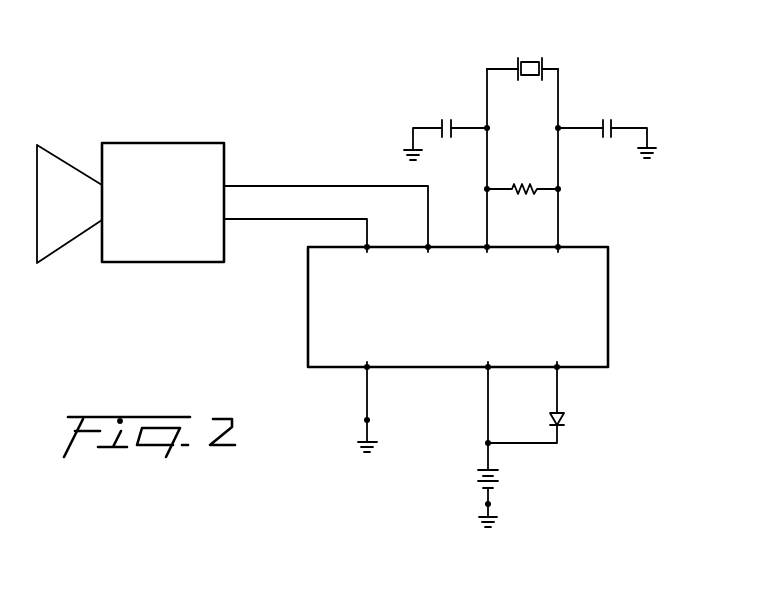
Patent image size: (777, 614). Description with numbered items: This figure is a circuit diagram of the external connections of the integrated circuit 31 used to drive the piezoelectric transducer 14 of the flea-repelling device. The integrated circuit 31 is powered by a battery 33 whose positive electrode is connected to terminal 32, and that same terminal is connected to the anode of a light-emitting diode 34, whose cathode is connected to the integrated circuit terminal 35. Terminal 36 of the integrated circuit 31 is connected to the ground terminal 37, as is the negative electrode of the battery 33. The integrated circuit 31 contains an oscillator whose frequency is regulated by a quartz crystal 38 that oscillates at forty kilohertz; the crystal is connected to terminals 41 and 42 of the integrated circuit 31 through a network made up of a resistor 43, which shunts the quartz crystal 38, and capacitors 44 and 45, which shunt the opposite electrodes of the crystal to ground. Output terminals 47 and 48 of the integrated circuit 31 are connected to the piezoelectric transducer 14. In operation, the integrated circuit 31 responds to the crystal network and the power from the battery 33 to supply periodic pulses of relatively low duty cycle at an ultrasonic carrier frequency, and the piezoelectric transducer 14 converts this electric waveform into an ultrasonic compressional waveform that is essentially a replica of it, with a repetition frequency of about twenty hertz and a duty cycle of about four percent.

The piezoelectric transducer 14 is at (182, 151).
The integrated circuit 31 is at (593, 310).
The terminal 32 is at (486, 368).
The battery 33 is at (478, 478).
The light-emitting diode 34 is at (550, 418).
The integrated circuit terminal 35 is at (560, 368).
The terminal 36 is at (366, 368).
The ground terminal 37 is at (366, 420).
The quartz crystal 38 is at (532, 81).
The terminal 41 is at (485, 245).
The terminal 42 is at (562, 245).
The resistor 43 is at (523, 195).
The capacitor 44 is at (437, 125).
The capacitor 45 is at (614, 126).
The output terminal 47 is at (427, 245).
The output terminal 48 is at (365, 246).